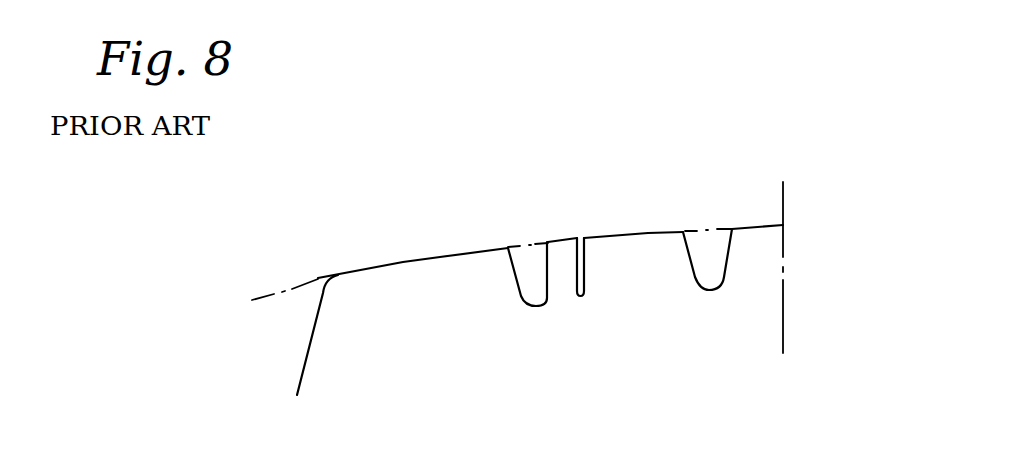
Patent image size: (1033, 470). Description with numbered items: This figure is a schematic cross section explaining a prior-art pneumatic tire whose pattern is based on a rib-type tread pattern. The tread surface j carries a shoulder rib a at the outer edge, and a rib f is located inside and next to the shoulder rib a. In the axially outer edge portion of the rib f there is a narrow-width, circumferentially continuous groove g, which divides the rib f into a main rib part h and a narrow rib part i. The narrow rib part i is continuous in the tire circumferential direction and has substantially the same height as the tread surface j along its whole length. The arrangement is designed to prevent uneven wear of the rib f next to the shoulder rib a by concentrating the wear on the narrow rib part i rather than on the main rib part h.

The shoulder rib a is at (403, 262).
The tread surface j is at (318, 278).
The rib f is at (672, 98).
The narrow rib part i is at (560, 240).
The narrow-width circumferentially-continuous groove g is at (580, 236).
The main rib part h is at (648, 232).